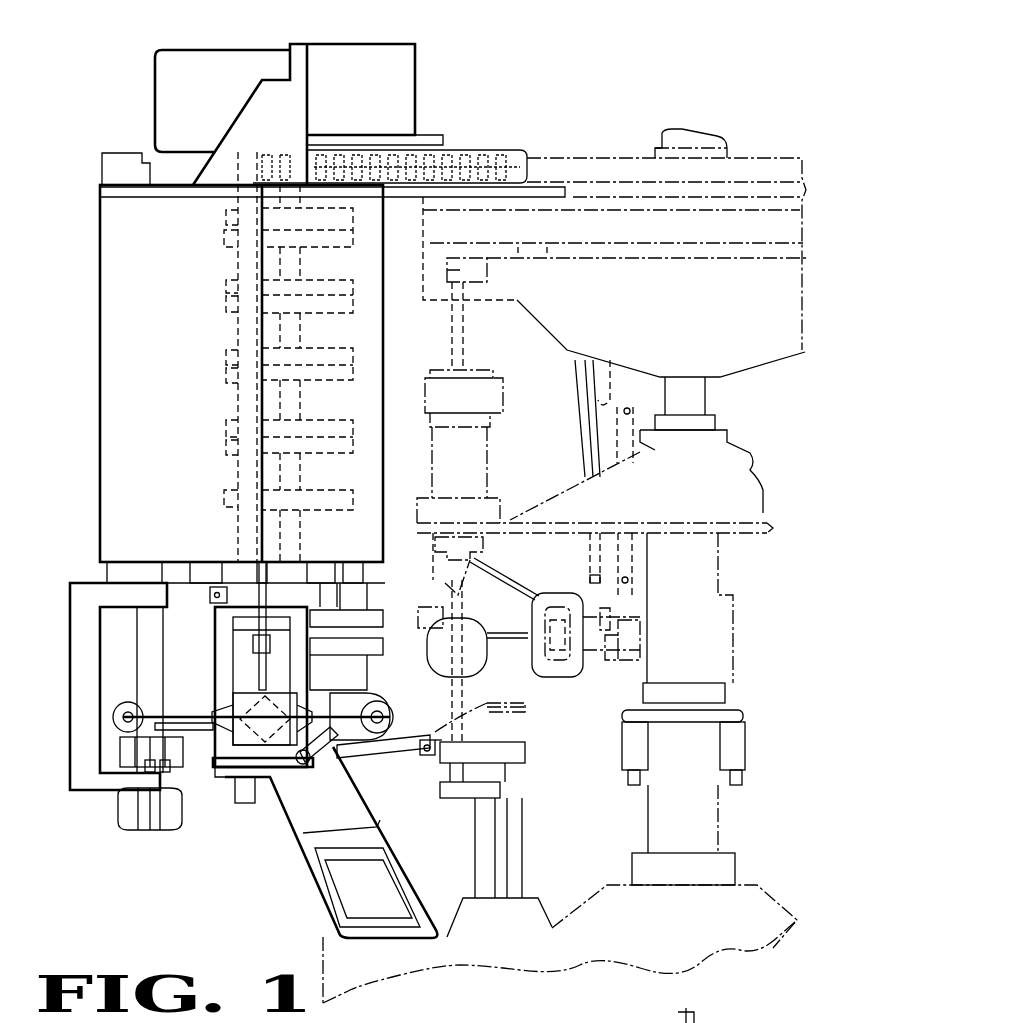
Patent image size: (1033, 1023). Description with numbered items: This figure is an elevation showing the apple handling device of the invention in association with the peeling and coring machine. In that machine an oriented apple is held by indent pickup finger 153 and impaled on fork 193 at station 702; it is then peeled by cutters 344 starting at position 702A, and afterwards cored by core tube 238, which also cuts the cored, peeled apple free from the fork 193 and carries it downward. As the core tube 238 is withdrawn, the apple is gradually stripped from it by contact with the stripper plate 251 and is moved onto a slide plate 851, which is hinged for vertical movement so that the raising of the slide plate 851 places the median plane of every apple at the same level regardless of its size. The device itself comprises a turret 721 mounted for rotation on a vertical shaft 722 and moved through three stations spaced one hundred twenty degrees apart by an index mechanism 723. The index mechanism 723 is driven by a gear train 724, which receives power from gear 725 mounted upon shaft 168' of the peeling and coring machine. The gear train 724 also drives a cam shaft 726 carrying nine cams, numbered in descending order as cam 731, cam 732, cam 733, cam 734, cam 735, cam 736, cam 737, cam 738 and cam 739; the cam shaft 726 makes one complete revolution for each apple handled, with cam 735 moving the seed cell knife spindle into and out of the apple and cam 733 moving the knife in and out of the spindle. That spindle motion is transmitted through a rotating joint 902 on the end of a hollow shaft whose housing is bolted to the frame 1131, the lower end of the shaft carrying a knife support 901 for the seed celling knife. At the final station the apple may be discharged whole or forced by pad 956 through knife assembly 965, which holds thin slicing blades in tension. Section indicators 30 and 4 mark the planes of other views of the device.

The index mechanism 723 is at (207, 44).
The gear train 724 is at (458, 140).
The gear 725 is at (570, 158).
The shaft 168' is at (720, 124).
The section line 30 is at (48, 205).
The cam 731 is at (223, 218).
The cam 732 is at (222, 240).
The cam 733 is at (223, 285).
The cam 734 is at (223, 300).
The cam 735 is at (223, 357).
The cam 736 is at (223, 377).
The cam 737 is at (223, 428).
The cam 738 is at (223, 447).
The cam 739 is at (222, 497).
The vertical shaft 722 is at (236, 536).
The cam shaft 726 is at (293, 326).
The frame 1131 is at (100, 548).
The turret 721 is at (212, 630).
The knife support 901 is at (260, 667).
The pad 956 is at (122, 742).
The knife assembly 965 is at (201, 795).
The slide plate 851 is at (378, 752).
The core tube 238 is at (447, 683).
The cutters 344 is at (518, 582).
The stripper plate 251 is at (530, 713).
The section line 4 is at (33, 610).
The fork 193 is at (695, 1013).
The indent pickup finger 153 is at (563, 1022).
The rotating joint 902 is at (357, 1016).
The station 702 is at (747, 1016).
The position 702A is at (825, 1016).